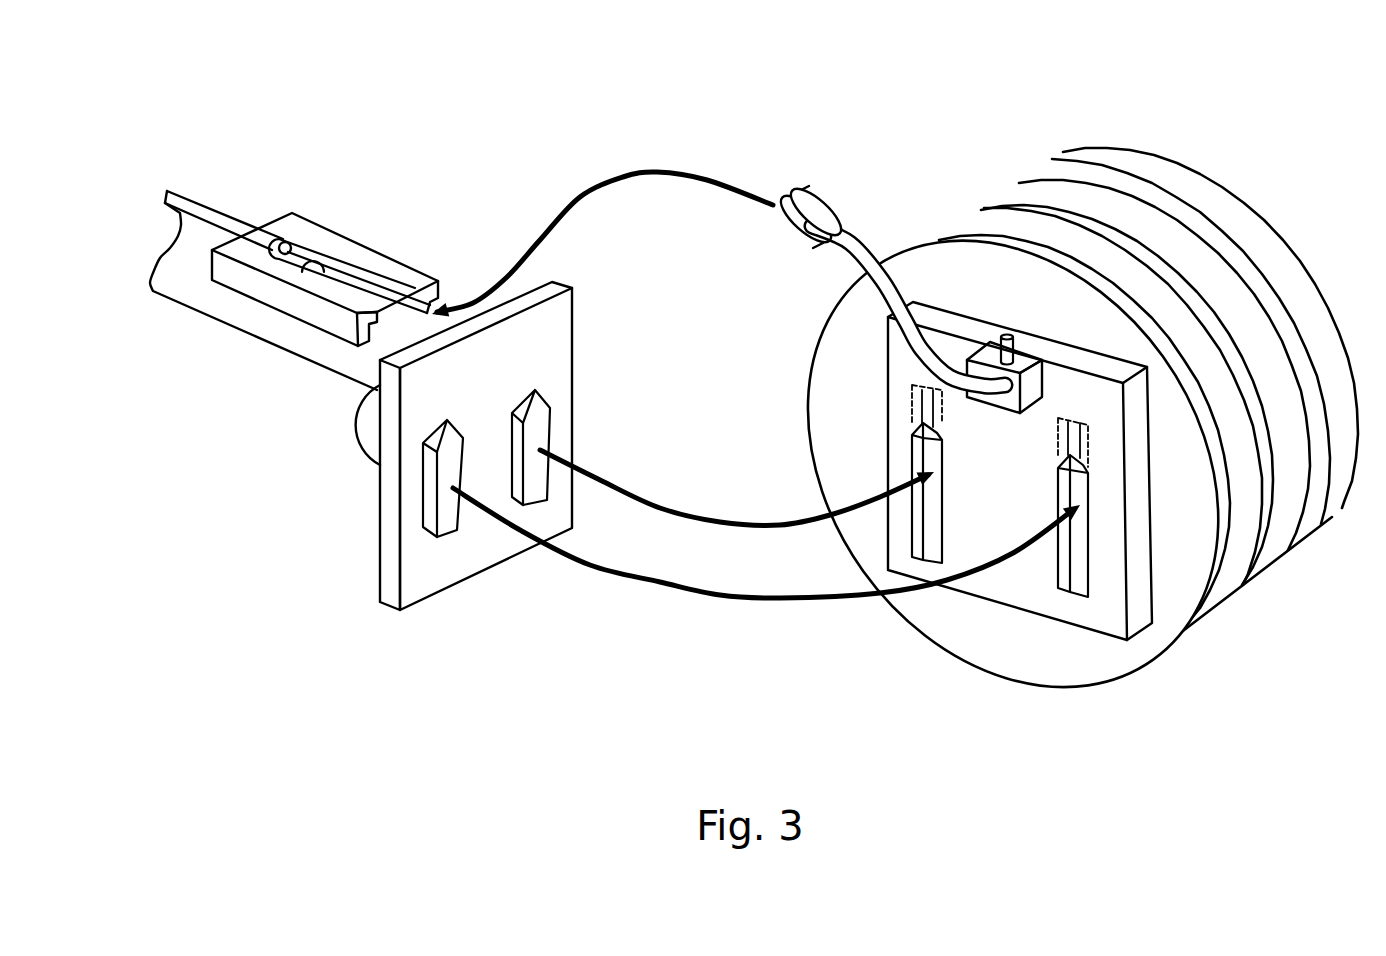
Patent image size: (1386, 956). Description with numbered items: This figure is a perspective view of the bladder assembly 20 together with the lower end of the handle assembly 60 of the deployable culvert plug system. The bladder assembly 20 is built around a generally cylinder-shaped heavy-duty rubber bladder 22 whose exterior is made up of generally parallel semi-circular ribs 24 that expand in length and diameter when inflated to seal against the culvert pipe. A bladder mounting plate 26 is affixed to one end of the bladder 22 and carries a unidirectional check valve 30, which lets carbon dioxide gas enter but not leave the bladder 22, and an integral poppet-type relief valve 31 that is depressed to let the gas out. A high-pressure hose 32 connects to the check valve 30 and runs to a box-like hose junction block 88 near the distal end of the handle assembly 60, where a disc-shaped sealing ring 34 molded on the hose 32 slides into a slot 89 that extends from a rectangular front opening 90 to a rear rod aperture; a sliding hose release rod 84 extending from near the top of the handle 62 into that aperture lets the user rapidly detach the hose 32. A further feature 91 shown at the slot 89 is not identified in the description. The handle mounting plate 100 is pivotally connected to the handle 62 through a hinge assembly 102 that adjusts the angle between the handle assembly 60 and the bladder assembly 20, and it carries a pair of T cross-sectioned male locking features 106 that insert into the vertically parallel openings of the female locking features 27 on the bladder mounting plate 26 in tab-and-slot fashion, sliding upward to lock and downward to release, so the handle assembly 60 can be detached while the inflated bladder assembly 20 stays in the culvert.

The bladder assembly 20 is at (977, 197).
The bladder 22 is at (1040, 433).
The ribs 24 is at (1312, 503).
The bladder mounting plate 26 is at (1053, 618).
The female locking features 27 is at (1057, 473).
The check valve 30 is at (1033, 387).
The relief valve 31 is at (1010, 333).
The high-pressure hose 32 is at (842, 244).
The sealing ring 34 is at (789, 228).
The handle assembly 60 is at (263, 309).
The handle 62 is at (243, 330).
The hose release rod 84 is at (286, 247).
The hose junction block 88 is at (289, 214).
The slot 89 is at (307, 243).
The front opening 90 is at (395, 318).
The detent 91 is at (322, 272).
The handle mounting plate 100 is at (383, 515).
The hinge assembly 102 is at (358, 445).
The male locking features 106 is at (540, 415).